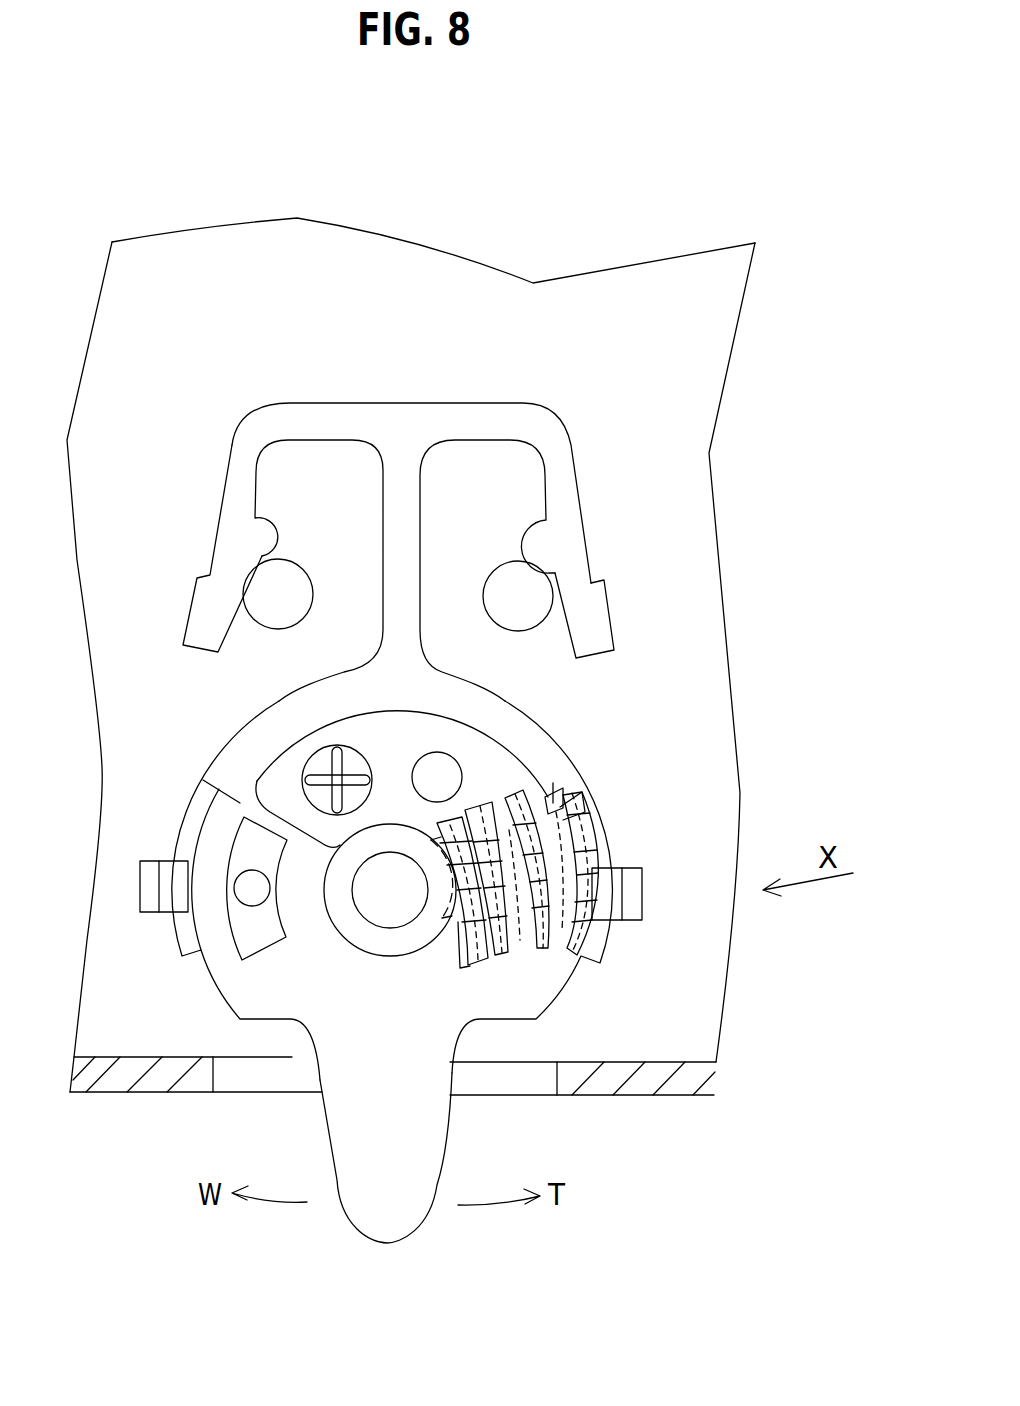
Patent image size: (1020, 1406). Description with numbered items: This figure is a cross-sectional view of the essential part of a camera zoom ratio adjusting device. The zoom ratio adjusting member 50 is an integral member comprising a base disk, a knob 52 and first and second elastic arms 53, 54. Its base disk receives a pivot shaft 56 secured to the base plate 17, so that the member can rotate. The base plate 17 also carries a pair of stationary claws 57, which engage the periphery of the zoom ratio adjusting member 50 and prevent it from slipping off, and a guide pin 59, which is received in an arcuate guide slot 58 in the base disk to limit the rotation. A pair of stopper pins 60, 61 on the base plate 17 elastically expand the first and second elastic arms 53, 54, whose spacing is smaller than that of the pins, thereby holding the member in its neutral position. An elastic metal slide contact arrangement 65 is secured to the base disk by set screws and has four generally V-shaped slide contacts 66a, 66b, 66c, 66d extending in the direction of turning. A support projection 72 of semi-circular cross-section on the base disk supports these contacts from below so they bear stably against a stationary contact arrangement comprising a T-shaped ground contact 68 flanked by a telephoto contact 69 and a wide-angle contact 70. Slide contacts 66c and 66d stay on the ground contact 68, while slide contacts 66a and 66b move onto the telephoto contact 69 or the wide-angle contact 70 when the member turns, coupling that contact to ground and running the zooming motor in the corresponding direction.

The base plate 17 is at (117, 272).
The zoom ratio adjusting member 50 is at (361, 392).
The knob 52 is at (384, 1228).
The first elastic arm 53 is at (585, 607).
The second elastic arm 54 is at (205, 622).
The pivot shaft 56 is at (373, 905).
The stationary claws 57 is at (150, 912).
The arcuate guide slot 58 is at (272, 826).
The guide pin 59 is at (252, 897).
The stopper pin 60 is at (502, 582).
The stopper pin 61 is at (287, 582).
The elastic metal slide contact arrangement 65 is at (275, 762).
The V-shaped elastic metal slide contact 66a is at (575, 960).
The V-shaped elastic metal slide contact 66b is at (540, 957).
The V-shaped elastic metal slide contact 66c is at (496, 962).
The V-shaped elastic metal slide contact 66d is at (470, 968).
The ground contact 68 is at (580, 843).
The telephoto contact 69 is at (553, 797).
The wide-angle contact 70 is at (596, 891).
The support projection 72 is at (516, 947).